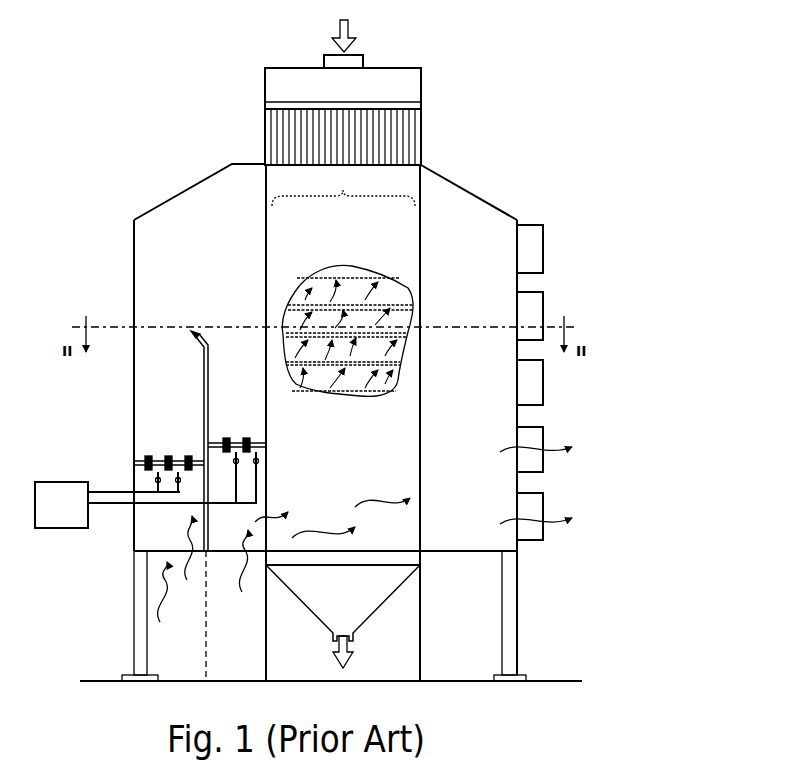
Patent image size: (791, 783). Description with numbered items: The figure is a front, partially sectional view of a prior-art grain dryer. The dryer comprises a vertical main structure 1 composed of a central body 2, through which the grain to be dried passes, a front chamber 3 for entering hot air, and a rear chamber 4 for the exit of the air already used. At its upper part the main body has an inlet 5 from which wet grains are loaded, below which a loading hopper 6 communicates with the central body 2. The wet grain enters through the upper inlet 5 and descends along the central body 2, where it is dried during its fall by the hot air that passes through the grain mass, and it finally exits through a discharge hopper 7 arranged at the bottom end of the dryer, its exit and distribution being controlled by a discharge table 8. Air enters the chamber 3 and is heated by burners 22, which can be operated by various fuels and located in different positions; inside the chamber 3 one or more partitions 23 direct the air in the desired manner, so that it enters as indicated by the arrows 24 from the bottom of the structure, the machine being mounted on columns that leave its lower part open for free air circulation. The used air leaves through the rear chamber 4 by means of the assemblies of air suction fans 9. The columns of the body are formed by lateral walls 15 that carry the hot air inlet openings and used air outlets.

The vertical main structure 1 is at (203, 150).
The central body 2 is at (343, 188).
The front chamber 3 is at (132, 238).
The rear chamber 4 is at (520, 217).
The inlet 5 is at (365, 62).
The loading hopper 6 is at (422, 135).
The discharge hopper 7 is at (364, 622).
The discharge table 8 is at (405, 558).
The air suction fans 9 is at (544, 244).
The lateral walls 15 is at (396, 225).
The burners 22 is at (160, 456).
The partitions 23 is at (214, 338).
The arrows 24 is at (163, 595).